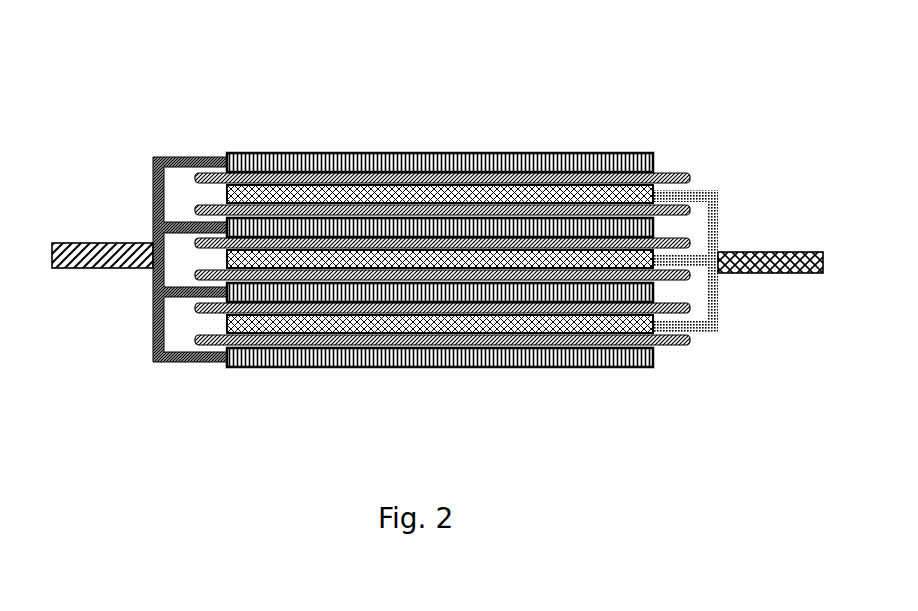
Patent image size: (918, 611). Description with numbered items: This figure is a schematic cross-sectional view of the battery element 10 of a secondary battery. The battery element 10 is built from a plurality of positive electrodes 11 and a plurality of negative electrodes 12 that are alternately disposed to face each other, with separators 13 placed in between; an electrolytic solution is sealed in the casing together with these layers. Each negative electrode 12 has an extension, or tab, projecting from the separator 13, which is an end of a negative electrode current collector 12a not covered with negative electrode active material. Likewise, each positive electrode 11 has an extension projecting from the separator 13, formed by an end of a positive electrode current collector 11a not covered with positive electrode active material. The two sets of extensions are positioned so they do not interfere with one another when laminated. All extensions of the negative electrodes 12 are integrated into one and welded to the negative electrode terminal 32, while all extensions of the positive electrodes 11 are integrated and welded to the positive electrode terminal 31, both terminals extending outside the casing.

The battery element 10 is at (433, 233).
The positive electrode 11 is at (343, 328).
The positive electrode current collector 11a is at (698, 332).
The negative electrode 12 is at (383, 153).
The negative electrode current collector 12a is at (195, 363).
The separator 13 is at (673, 174).
The positive electrode terminal 31 is at (777, 252).
The negative electrode terminal 32 is at (92, 242).